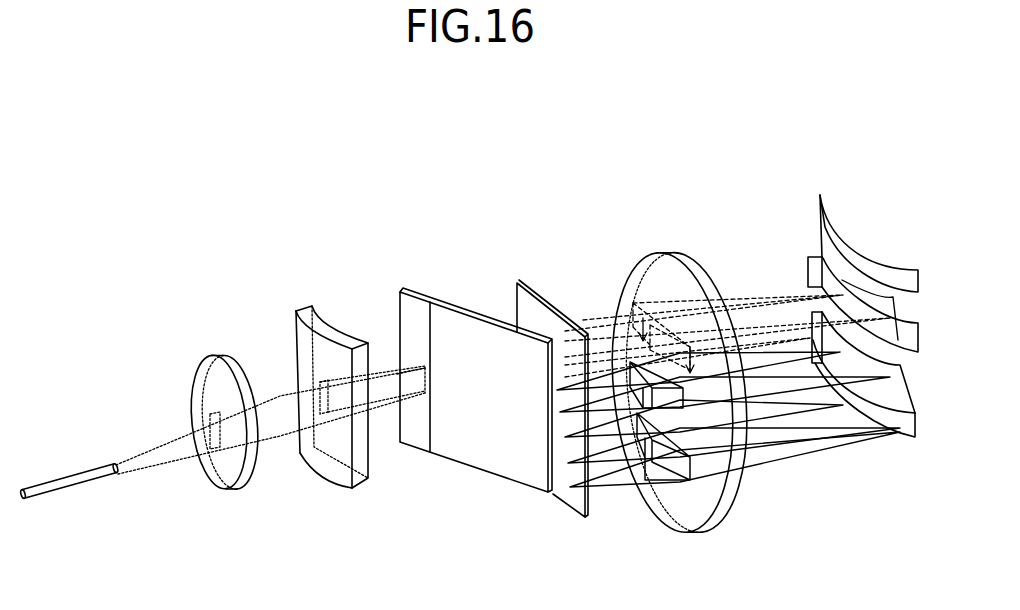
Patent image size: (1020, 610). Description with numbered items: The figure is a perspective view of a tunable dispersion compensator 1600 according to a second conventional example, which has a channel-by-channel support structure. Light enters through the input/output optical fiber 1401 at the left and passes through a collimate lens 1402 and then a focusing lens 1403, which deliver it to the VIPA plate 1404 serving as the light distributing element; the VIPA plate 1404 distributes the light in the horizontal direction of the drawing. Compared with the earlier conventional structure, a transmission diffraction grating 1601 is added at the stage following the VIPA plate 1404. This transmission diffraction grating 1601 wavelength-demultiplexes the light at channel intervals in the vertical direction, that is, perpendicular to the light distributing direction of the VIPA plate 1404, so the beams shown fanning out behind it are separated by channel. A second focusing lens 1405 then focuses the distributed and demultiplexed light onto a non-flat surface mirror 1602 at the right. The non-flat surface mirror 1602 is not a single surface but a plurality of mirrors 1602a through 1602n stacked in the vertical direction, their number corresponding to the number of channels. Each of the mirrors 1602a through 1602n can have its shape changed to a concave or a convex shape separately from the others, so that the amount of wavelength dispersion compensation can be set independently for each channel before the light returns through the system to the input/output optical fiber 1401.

The tunable dispersion compensator 1600 is at (539, 146).
The input/output optical fiber 1401 is at (62, 477).
The collimate lens 1402 is at (230, 355).
The focusing lens 1403 is at (323, 309).
The VIPA plate 1404 is at (402, 291).
The transmission diffraction grating 1601 is at (520, 282).
The focusing lens 1405 is at (660, 252).
The non-flat surface mirror 1602 is at (868, 316).
The mirror 1602a is at (863, 240).
The mirror 1602n is at (895, 441).